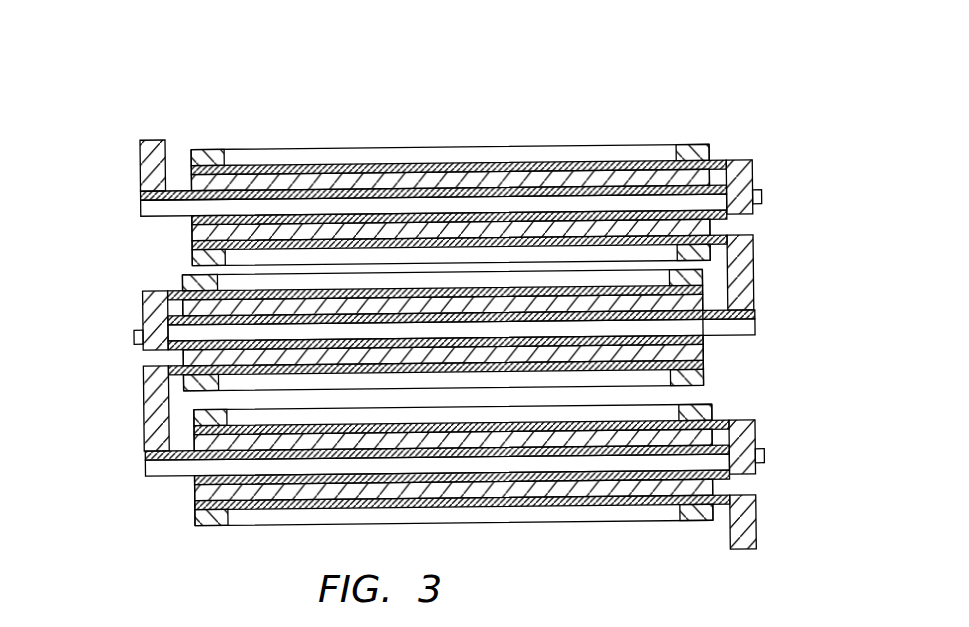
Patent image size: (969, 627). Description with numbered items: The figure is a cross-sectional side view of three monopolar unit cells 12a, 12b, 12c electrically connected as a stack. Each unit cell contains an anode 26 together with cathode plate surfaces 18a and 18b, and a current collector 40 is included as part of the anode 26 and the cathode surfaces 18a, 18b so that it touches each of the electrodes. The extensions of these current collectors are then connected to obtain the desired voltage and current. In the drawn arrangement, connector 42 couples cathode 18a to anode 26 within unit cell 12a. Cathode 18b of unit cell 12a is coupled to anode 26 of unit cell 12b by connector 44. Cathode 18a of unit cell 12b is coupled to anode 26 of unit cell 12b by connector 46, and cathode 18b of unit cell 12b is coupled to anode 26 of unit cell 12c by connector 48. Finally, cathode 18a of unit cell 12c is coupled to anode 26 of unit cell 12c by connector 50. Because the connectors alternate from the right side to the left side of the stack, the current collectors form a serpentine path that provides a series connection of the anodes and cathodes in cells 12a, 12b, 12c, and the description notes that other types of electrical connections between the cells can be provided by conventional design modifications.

The unit cell 12a is at (780, 188).
The unit cell 12b is at (124, 343).
The unit cell 12c is at (178, 504).
The cathode 18a is at (383, 163).
The cathode 18b is at (190, 262).
The anode 26 is at (581, 208).
The current collector 40 is at (175, 166).
The connector 42 is at (757, 160).
The connector 44 is at (750, 255).
The connector 46 is at (143, 308).
The connector 48 is at (145, 397).
The connector 50 is at (747, 432).